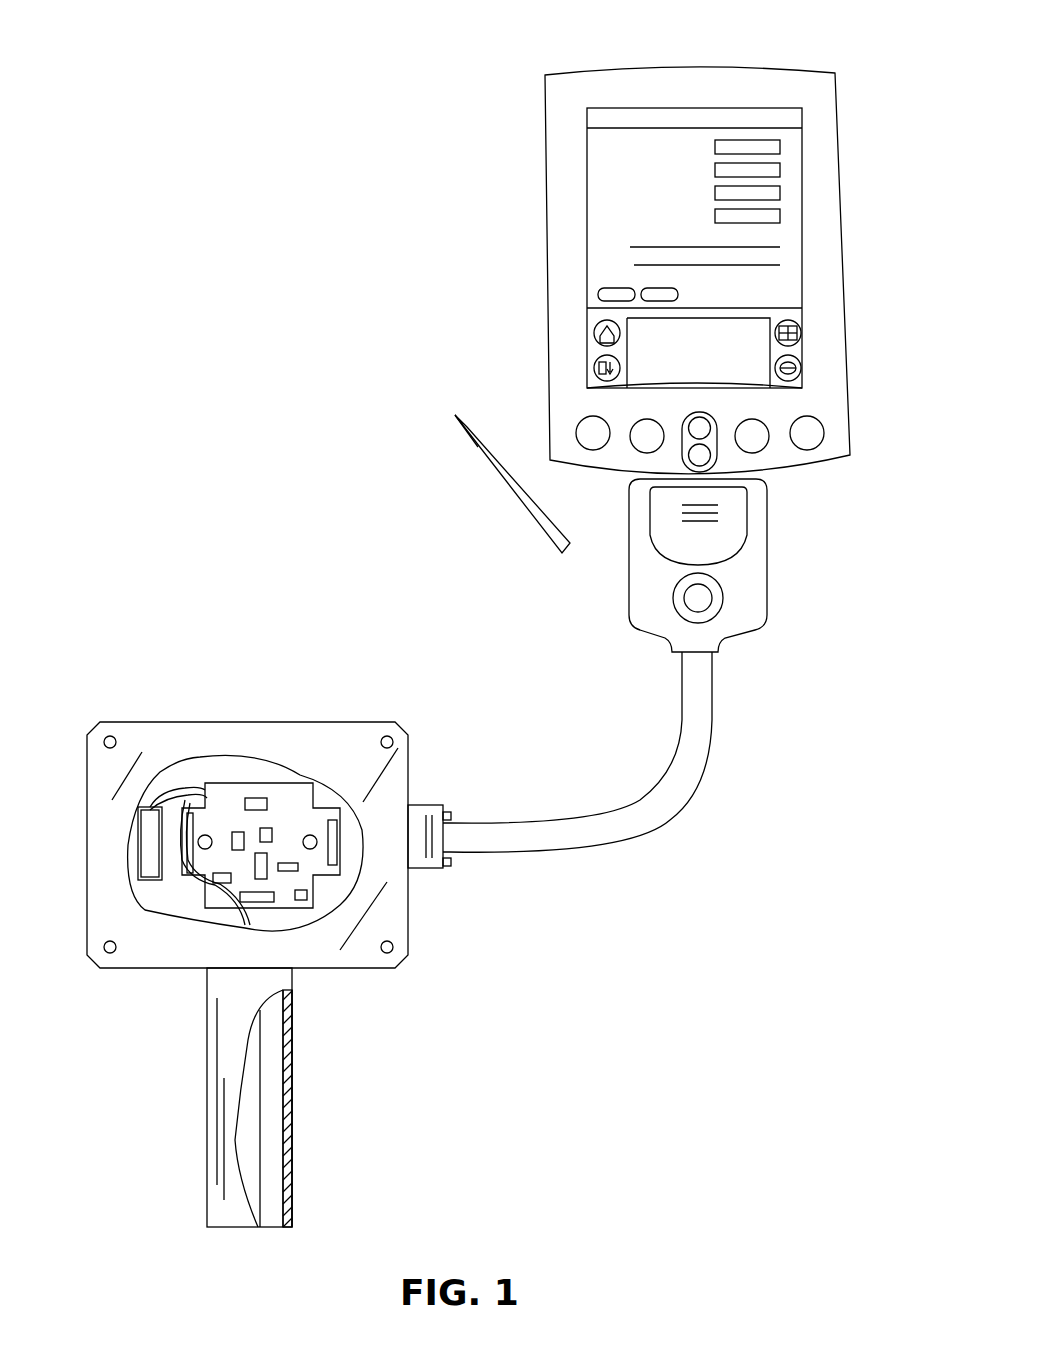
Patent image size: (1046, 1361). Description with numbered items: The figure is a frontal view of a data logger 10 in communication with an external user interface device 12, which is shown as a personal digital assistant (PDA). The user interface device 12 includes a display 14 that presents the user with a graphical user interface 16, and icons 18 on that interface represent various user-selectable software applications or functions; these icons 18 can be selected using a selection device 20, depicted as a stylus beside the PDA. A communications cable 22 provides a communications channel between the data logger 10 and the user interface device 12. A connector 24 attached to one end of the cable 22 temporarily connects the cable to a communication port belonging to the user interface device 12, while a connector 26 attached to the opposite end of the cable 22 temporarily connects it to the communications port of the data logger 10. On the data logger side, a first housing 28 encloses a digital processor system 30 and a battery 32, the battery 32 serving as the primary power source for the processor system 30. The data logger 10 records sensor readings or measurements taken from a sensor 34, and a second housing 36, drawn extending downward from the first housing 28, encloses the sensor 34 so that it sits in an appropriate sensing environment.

The data logger 10 is at (258, 660).
The external user interface device 12 is at (505, 72).
The display 14 is at (585, 177).
The graphical user interface 16 is at (603, 228).
The icons 18 is at (597, 368).
The selection device 20 is at (510, 483).
The communications cable 22 is at (667, 778).
The connector 24 is at (750, 588).
The connector 26 is at (433, 860).
The first housing 28 is at (313, 935).
The digital processor system 30 is at (287, 797).
The battery 32 is at (148, 843).
The sensor 34 is at (250, 1117).
The second housing 36 is at (237, 1012).